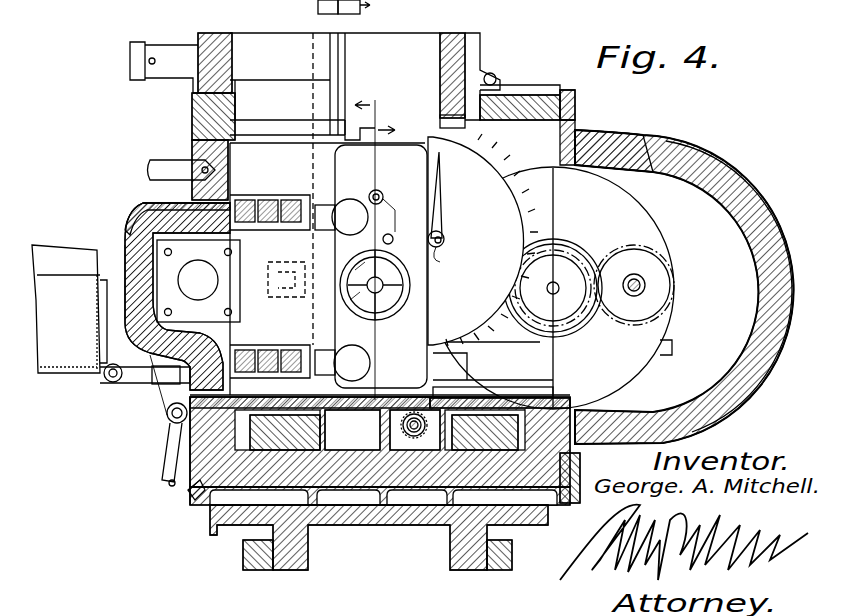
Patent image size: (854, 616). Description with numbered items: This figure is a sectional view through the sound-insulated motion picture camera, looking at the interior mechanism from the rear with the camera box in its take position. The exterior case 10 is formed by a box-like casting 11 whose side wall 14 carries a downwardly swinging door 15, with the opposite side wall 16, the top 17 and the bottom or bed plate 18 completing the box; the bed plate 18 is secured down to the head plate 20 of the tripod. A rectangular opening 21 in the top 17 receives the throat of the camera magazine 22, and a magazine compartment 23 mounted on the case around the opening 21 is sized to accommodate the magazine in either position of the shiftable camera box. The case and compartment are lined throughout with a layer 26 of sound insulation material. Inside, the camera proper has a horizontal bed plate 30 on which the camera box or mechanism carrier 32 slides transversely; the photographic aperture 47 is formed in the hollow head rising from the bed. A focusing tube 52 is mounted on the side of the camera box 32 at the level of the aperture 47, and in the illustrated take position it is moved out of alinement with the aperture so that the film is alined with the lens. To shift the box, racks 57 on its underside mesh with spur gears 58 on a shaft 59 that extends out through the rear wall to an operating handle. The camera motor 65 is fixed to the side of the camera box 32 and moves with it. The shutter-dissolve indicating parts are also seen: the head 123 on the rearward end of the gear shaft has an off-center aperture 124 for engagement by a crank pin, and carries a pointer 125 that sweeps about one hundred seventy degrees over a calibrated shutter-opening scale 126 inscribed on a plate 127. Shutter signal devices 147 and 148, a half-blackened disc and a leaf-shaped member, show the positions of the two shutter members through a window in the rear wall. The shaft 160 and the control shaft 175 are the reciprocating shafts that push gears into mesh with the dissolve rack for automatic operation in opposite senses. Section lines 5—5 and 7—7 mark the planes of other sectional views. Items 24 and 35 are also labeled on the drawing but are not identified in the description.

The section line 5— 5 is at (354, 217).
The section line 7— 7 is at (378, 284).
The exterior case 10 is at (747, 165).
The box-like casting 11 is at (510, 85).
The side wall 14 is at (192, 112).
The downwardly swinging door 15 is at (135, 212).
The side wall 16 is at (762, 197).
The top wall 17 is at (535, 93).
The bottom or bed plate 18 is at (343, 487).
The head plate of the tripod 20 is at (377, 517).
The rectangular opening 21 is at (230, 95).
The camera magazine 22 is at (350, 66).
The magazine compartment 23 is at (195, 29).
The pivot link 24 is at (168, 420).
The layer of sound insulation material 26 is at (222, 33).
The horizontal base or bed plate 30 is at (365, 395).
The camera box or mechanism carrier 32 is at (178, 154).
The pivot 35 is at (203, 497).
The photographic aperture 47 is at (283, 300).
The focusing tube 52 is at (172, 265).
The racks 57 is at (410, 396).
The spur gear 58 is at (443, 410).
The shaft 59 is at (414, 438).
The camera motor 65 is at (640, 221).
The head 123 is at (459, 260).
The off center aperture 124 is at (446, 240).
The pointer 125 is at (441, 200).
The calibrated shutter-opening scale 126 is at (470, 153).
The plate 127 is at (546, 208).
The shutter signal device 147 is at (358, 306).
The shutter signal device 148 is at (363, 270).
The shaft 160 is at (390, 234).
The control shaft 175 is at (379, 190).